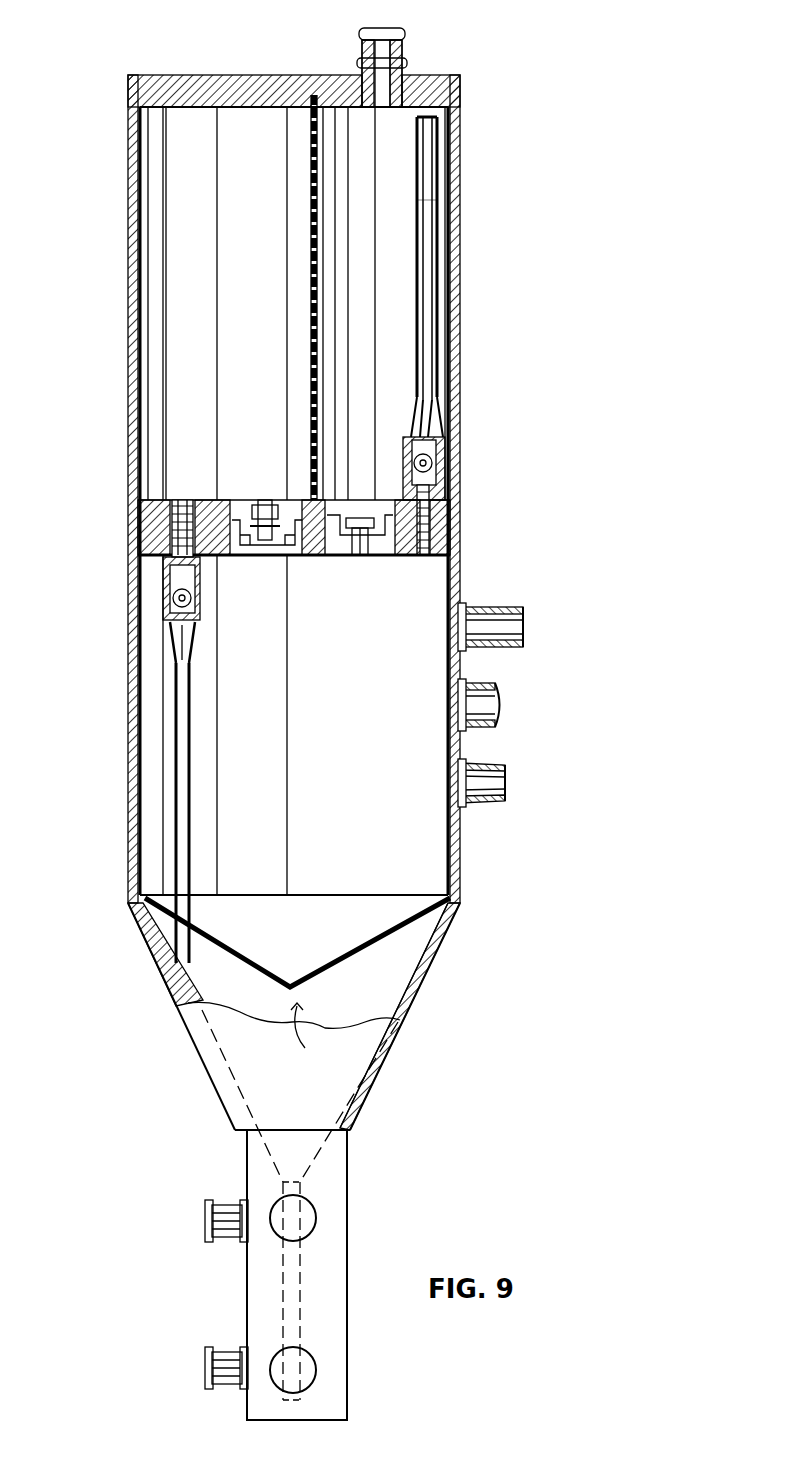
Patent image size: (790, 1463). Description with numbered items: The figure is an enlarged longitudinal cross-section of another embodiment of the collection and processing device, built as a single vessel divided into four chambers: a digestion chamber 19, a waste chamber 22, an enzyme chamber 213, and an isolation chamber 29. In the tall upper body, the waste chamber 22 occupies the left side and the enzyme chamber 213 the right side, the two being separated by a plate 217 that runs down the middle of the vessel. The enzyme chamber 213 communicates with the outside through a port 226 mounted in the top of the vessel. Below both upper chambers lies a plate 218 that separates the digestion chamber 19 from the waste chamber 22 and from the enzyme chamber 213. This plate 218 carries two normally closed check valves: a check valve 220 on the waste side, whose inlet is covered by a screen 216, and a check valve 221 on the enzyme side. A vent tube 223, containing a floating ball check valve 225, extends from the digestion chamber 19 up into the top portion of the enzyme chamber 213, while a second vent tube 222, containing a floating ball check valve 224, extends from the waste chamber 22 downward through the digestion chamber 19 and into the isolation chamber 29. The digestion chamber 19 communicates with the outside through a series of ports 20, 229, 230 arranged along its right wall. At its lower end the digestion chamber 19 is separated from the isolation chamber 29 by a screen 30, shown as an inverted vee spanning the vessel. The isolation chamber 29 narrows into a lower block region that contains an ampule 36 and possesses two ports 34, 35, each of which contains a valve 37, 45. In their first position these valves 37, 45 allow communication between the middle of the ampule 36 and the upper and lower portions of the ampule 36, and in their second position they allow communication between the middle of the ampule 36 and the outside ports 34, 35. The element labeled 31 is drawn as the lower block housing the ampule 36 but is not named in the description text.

The waste chamber 22 is at (185, 180).
The port 226 is at (404, 36).
The plate 217 is at (312, 262).
The enzyme chamber 213 is at (398, 232).
The vent tube 223 is at (436, 325).
The floating ball check valve 225 is at (445, 462).
The plate 218 is at (312, 560).
The screen 216 is at (262, 560).
The check valve 220 is at (250, 505).
The check valve 221 is at (362, 560).
The floating ball check valve 224 is at (163, 604).
The vent tube 222 is at (176, 776).
The digestion chamber 19 is at (402, 818).
The port 20 is at (492, 606).
The port 229 is at (502, 697).
The port 230 is at (505, 782).
The screen 30 is at (380, 935).
The isolation chamber 29 is at (300, 1012).
The bracket block 31 is at (247, 1310).
The ampule 36 is at (310, 1312).
The valve 37 is at (305, 1212).
The valve 45 is at (305, 1362).
The port 34 is at (205, 1222).
The port 35 is at (205, 1368).